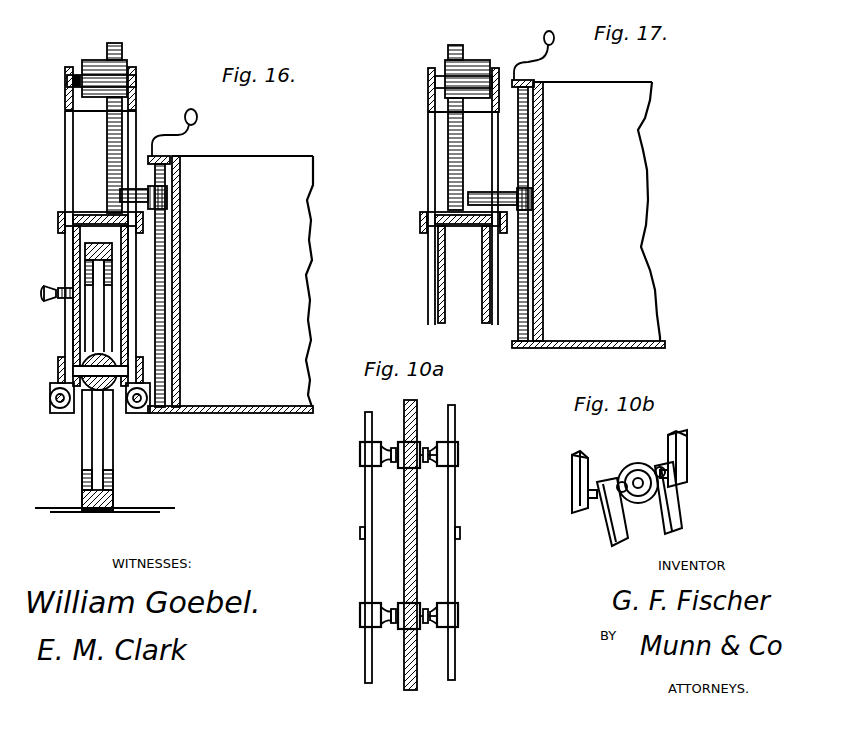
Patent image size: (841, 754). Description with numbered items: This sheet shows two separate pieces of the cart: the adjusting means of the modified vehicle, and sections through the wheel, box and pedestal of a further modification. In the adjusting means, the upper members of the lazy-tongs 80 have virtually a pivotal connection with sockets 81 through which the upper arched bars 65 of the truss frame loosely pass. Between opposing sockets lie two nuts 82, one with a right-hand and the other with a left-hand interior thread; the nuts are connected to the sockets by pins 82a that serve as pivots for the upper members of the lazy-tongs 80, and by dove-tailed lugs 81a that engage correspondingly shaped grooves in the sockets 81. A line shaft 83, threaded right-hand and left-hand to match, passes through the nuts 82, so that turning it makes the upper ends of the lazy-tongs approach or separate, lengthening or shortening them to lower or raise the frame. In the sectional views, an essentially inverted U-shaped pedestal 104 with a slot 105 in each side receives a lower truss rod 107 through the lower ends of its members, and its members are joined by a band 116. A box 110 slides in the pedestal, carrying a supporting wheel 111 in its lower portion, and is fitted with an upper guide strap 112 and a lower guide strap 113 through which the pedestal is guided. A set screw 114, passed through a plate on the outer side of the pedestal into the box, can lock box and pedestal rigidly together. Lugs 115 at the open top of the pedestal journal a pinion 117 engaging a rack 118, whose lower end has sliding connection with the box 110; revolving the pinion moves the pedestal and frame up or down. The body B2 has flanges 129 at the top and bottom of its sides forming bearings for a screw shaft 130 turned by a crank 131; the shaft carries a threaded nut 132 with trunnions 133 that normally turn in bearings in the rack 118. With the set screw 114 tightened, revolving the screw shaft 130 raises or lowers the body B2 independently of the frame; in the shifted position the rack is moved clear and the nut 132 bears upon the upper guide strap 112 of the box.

In FIG. 16, the lugs 115 is at (65, 72).
In FIG. 17, the lugs 115 is at (428, 80).
In FIG. 16, the pinion 117 is at (103, 58).
In FIG. 17, the pinion 117 is at (478, 60).
In FIG. 16, the rack 118 is at (107, 145).
In FIG. 17, the rack 118 is at (455, 48).
In FIG. 16, the band 116 is at (82, 104).
In FIG. 17, the band 116 is at (478, 106).
In FIG. 16, the pedestal 104 is at (137, 112).
In FIG. 17, the pedestal 104 is at (428, 110).
In FIG. 16, the slot 105 is at (65, 165).
In FIG. 17, the slot 105 is at (482, 218).
In FIG. 16, the crank 131 is at (196, 122).
In FIG. 17, the crank 131 is at (553, 42).
In FIG. 16, the screw shaft 130 is at (165, 293).
In FIG. 17, the screw shaft 130 is at (528, 236).
In FIG. 16, the body B2 is at (242, 281).
In FIG. 17, the body B2 is at (596, 211).
In FIG. 16, the flanges 129 is at (170, 415).
In FIG. 17, the flanges 129 is at (526, 349).
In FIG. 16, the nut 132 is at (170, 192).
In FIG. 17, the nut 132 is at (520, 188).
In FIG. 16, the trunnions 133 is at (138, 190).
In FIG. 17, the trunnions 133 is at (482, 192).
In FIG. 16, the upper guide strap 112 is at (58, 228).
In FIG. 17, the upper guide strap 112 is at (420, 228).
In FIG. 16, the box 110 is at (73, 270).
In FIG. 17, the box 110 is at (482, 256).
In FIG. 16, the set screw 114 is at (48, 298).
In FIG. 16, the lower guide strap 113 is at (58, 372).
In FIG. 16, the lower truss rod 107 is at (58, 406).
In FIG. 16, the supporting wheel 111 is at (82, 452).
In FIG. 10A, the line shaft 83 is at (405, 556).
In FIG. 10A, the upper arched bars 65 is at (366, 568).
In FIG. 10A, the dove-tailed lugs 81a is at (388, 448).
In FIG. 10B, the dove-tailed lugs 81a is at (572, 480).
In FIG. 10A, the socket 81 is at (458, 455).
In FIG. 10A, the nut 82 is at (405, 466).
In FIG. 10B, the nut 82 is at (634, 470).
In FIG. 10A, the pins 82a is at (426, 465).
In FIG. 10B, the pins 82a is at (626, 492).
In FIG. 10A, the lazy-tongs 80 is at (440, 610).
In FIG. 10B, the lazy-tongs 80 is at (678, 514).